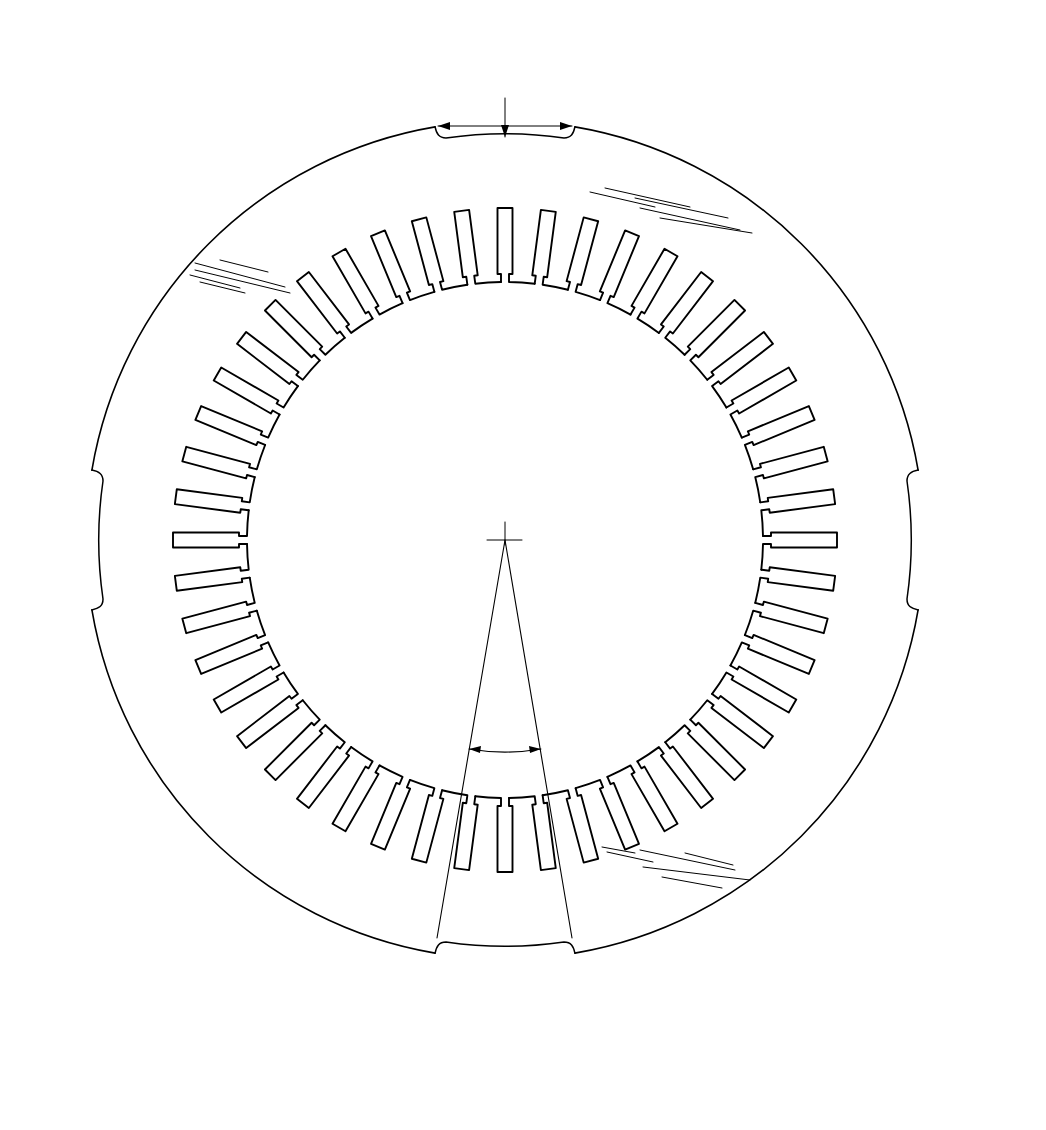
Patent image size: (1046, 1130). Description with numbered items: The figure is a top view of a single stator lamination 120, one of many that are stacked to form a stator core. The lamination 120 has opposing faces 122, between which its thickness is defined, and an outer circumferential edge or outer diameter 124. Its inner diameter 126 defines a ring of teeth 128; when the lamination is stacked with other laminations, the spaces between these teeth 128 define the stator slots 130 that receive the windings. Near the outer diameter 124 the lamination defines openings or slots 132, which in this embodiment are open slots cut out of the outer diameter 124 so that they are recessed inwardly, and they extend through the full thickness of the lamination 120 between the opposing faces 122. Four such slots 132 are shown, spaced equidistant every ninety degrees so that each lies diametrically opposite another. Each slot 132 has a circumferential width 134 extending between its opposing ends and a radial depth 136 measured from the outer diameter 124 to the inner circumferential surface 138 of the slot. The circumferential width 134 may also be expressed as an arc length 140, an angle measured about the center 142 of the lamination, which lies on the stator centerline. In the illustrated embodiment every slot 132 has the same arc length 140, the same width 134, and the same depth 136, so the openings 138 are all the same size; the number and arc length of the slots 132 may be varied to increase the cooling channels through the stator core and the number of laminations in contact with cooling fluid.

The lamination 120 is at (822, 206).
The opposing faces 122 is at (663, 193).
The outer circumferential edge or surface (outer diameter) 124 is at (292, 178).
The inner diameter 126 is at (392, 310).
The teeth 128 is at (258, 422).
The stator slots 130 is at (538, 297).
The openings or slots 132 is at (521, 94).
The circumferential width 134 is at (460, 126).
The radial depth 136 is at (503, 110).
The inner circumferential surface 138 is at (533, 126).
The arc length 140 is at (506, 748).
The center 142 is at (506, 538).